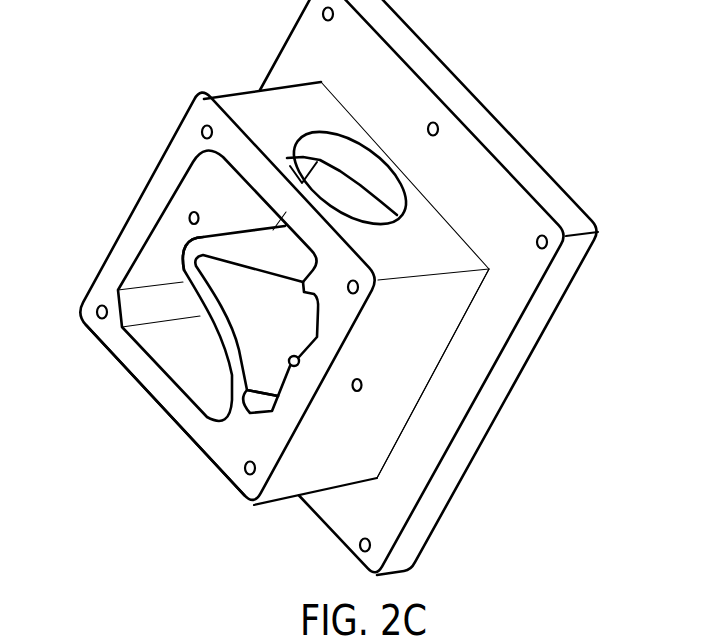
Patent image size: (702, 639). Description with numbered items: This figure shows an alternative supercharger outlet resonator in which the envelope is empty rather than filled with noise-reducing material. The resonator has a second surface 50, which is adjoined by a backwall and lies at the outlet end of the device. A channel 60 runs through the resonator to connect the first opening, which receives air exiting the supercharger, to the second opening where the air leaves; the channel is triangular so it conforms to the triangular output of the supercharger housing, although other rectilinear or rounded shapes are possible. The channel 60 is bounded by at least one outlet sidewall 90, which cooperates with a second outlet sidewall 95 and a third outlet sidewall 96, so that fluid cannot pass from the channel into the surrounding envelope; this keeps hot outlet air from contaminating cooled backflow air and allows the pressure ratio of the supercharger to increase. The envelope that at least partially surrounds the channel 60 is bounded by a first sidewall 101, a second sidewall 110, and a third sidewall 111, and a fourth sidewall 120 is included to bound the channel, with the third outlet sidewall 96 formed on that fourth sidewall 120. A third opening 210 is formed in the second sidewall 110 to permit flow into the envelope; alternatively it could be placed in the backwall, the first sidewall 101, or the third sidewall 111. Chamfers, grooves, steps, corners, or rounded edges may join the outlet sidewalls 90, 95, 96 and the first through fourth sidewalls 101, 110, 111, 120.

The second surface 50 is at (287, 43).
The channel 60 is at (247, 347).
The outlet sidewall 90 is at (203, 325).
The second outlet sidewall 95 is at (211, 250).
The third outlet sidewall 96 is at (293, 368).
The first sidewall 101 is at (453, 244).
The second sidewall 110 is at (137, 237).
The third sidewall 111 is at (113, 360).
The fourth sidewall 120 is at (392, 410).
The third opening 210 is at (390, 180).